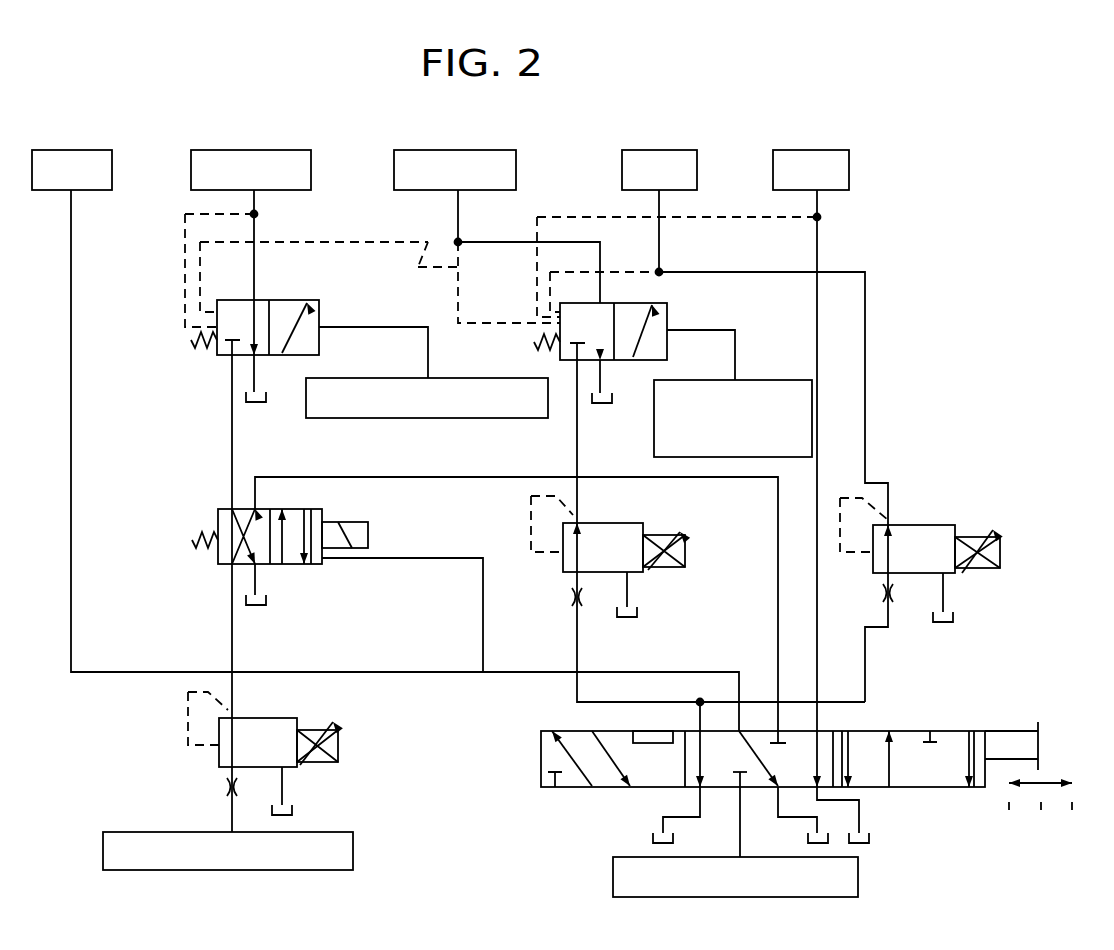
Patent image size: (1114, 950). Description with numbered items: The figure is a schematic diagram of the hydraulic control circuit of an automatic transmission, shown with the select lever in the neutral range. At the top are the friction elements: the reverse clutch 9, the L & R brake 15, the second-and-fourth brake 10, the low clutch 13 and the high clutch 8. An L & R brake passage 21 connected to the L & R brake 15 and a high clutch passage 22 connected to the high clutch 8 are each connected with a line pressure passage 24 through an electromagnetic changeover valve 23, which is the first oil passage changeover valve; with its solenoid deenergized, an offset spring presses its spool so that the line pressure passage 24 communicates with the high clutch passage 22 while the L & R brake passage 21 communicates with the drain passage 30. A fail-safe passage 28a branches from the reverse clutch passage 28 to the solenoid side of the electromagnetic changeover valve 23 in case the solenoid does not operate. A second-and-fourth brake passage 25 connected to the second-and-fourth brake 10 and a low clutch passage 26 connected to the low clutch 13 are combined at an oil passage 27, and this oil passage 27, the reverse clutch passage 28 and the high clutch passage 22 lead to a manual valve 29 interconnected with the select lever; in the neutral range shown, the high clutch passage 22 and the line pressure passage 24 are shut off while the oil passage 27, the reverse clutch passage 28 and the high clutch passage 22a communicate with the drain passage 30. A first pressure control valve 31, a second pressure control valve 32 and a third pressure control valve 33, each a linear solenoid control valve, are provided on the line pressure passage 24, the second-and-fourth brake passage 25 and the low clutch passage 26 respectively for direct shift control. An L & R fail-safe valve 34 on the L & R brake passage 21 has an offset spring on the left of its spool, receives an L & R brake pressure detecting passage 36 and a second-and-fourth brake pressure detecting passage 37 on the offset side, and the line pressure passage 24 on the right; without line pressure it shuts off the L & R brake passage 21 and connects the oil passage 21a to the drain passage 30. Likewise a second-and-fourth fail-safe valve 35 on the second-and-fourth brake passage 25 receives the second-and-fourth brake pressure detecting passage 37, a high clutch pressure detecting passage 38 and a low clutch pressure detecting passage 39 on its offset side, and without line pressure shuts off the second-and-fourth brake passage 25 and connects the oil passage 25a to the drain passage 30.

The high clutch 8 is at (823, 150).
The reverse clutch 9 is at (72, 150).
The 2 & 4 brake 10 is at (459, 150).
The low clutch 13 is at (666, 150).
The L & R brake 15 is at (252, 150).
The L & R brake passage 21 is at (232, 446).
The oil passage 21a is at (254, 272).
The high clutch passage 22 is at (452, 477).
The high clutch passage 22a is at (818, 410).
The electromagnetic changeover valve 23 is at (218, 520).
The line pressure passage 24 is at (428, 356).
The 2 & 4 brake passage 25 is at (577, 446).
The oil passage 25a is at (458, 221).
The low clutch passage 26 is at (865, 356).
The oil passage 27 is at (700, 705).
The reverse clutch passage 28 is at (71, 378).
The fail-safe passage 28a is at (483, 623).
The manual valve 29 is at (950, 721).
The drain passage 30 is at (254, 379).
The first pressure control valve 31 is at (338, 744).
The second pressure control valve 32 is at (685, 547).
The third pressure control valve 33 is at (1000, 547).
The L & R fail-safe valve 34 is at (319, 310).
The 2 & 4 fail-safe valve 35 is at (667, 310).
The L & R brake pressure detecting passage 36 is at (185, 268).
The 2 & 4 brake pressure detecting passage 37 is at (430, 275).
The high clutch pressure detecting passage 38 is at (568, 217).
The low clutch pressure detecting passage 39 is at (617, 272).